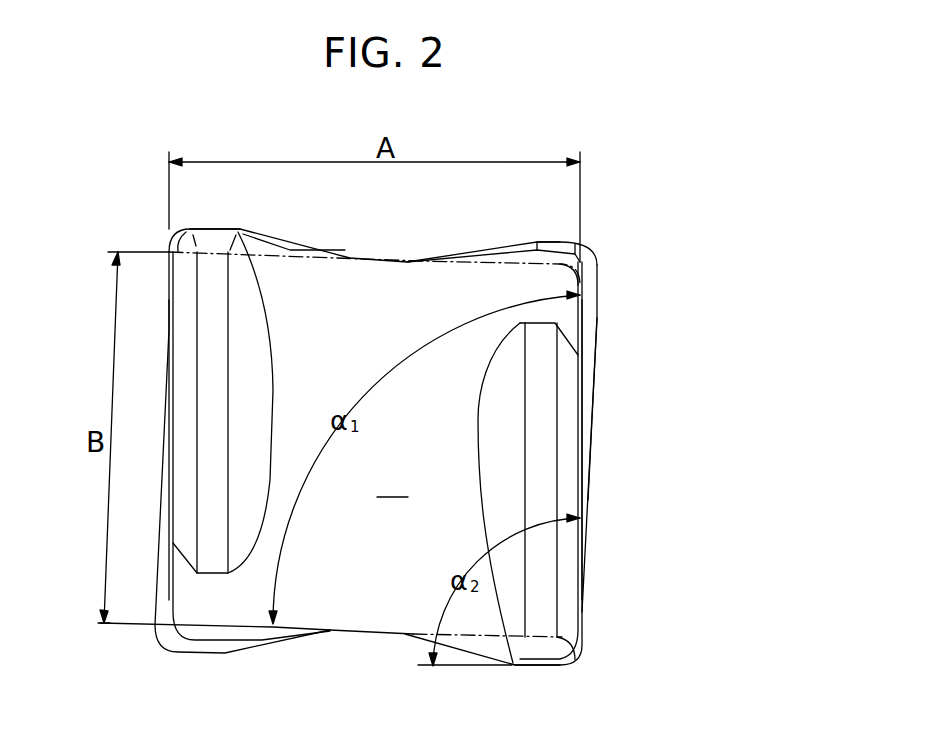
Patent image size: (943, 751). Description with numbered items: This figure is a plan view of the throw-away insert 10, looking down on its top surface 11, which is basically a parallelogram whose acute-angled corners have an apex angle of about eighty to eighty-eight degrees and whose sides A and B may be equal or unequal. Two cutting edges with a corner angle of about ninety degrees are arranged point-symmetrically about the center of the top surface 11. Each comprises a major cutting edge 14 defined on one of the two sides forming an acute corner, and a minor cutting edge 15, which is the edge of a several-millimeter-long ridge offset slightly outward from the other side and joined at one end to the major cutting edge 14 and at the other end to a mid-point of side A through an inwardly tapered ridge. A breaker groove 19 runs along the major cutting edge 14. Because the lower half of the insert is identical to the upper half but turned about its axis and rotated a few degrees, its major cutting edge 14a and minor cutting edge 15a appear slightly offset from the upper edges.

The throw-away insert 10 is at (408, 458).
The top surface 11 is at (348, 447).
The major cutting edge 14 is at (169, 366).
The major cutting edge of lower half portion 14a is at (594, 355).
The minor cutting edge 15 is at (212, 227).
The minor cutting edge of lower half portion 15a is at (553, 242).
The breaker groove 19 is at (548, 447).